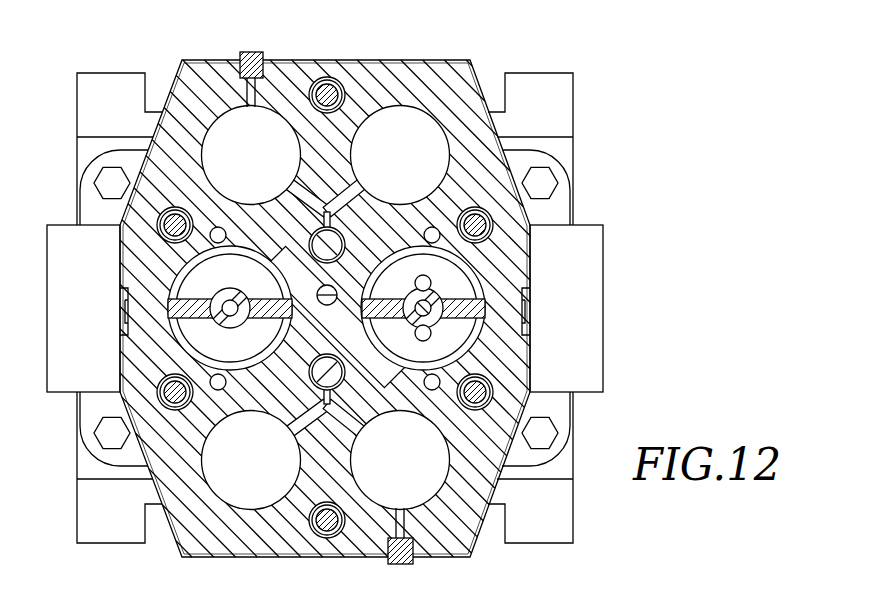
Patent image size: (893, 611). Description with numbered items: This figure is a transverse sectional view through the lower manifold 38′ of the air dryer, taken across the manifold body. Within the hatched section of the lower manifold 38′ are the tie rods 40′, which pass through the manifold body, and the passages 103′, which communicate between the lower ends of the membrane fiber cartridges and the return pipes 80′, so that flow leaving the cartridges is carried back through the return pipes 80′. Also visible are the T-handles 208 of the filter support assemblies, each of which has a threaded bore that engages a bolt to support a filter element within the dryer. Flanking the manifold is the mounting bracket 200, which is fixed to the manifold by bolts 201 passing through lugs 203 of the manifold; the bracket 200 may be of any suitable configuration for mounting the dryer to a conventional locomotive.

The lower manifold 38′ is at (411, 63).
The tie rods 40′ is at (329, 78).
The return pipes 80′ is at (343, 206).
The passages 103′ is at (301, 200).
The mounting bracket 200 is at (573, 95).
The bolts 201 is at (557, 178).
The lugs 203 is at (573, 205).
The T-handle 208 is at (168, 296).